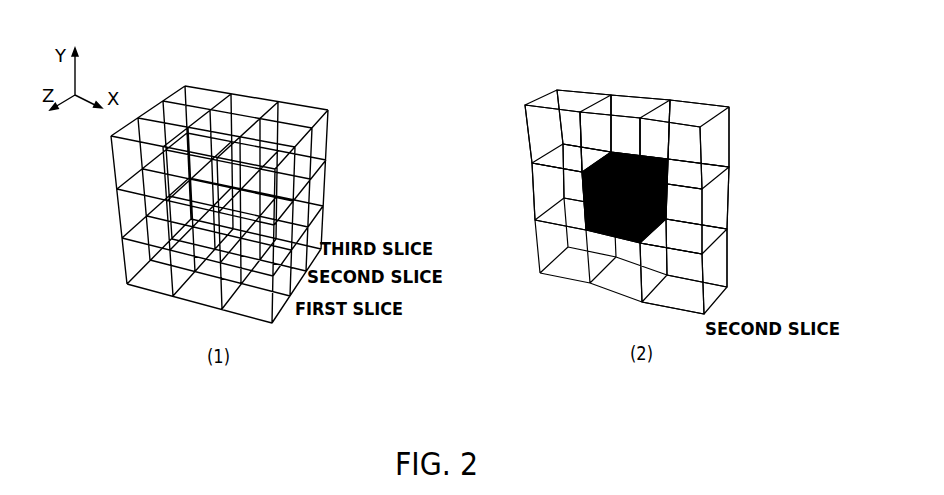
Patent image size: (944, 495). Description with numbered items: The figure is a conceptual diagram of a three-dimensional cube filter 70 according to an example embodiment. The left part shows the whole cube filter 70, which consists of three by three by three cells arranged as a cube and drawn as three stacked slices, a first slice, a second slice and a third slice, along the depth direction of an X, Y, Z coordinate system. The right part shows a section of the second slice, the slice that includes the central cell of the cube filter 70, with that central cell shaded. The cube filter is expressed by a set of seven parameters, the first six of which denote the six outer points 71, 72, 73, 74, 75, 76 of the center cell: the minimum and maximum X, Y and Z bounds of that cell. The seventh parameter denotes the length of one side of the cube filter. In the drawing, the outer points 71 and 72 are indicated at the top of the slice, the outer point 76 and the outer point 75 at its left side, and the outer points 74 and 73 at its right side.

The 3D cube filter 70 is at (250, 86).
The outer point of the center cell 71 is at (591, 95).
The outer point of the center cell 72 is at (657, 98).
The outer point of the center cell 73 is at (725, 242).
The outer point of the center cell 74 is at (727, 179).
The outer point of the center cell 75 is at (522, 204).
The outer point of the center cell 76 is at (553, 123).